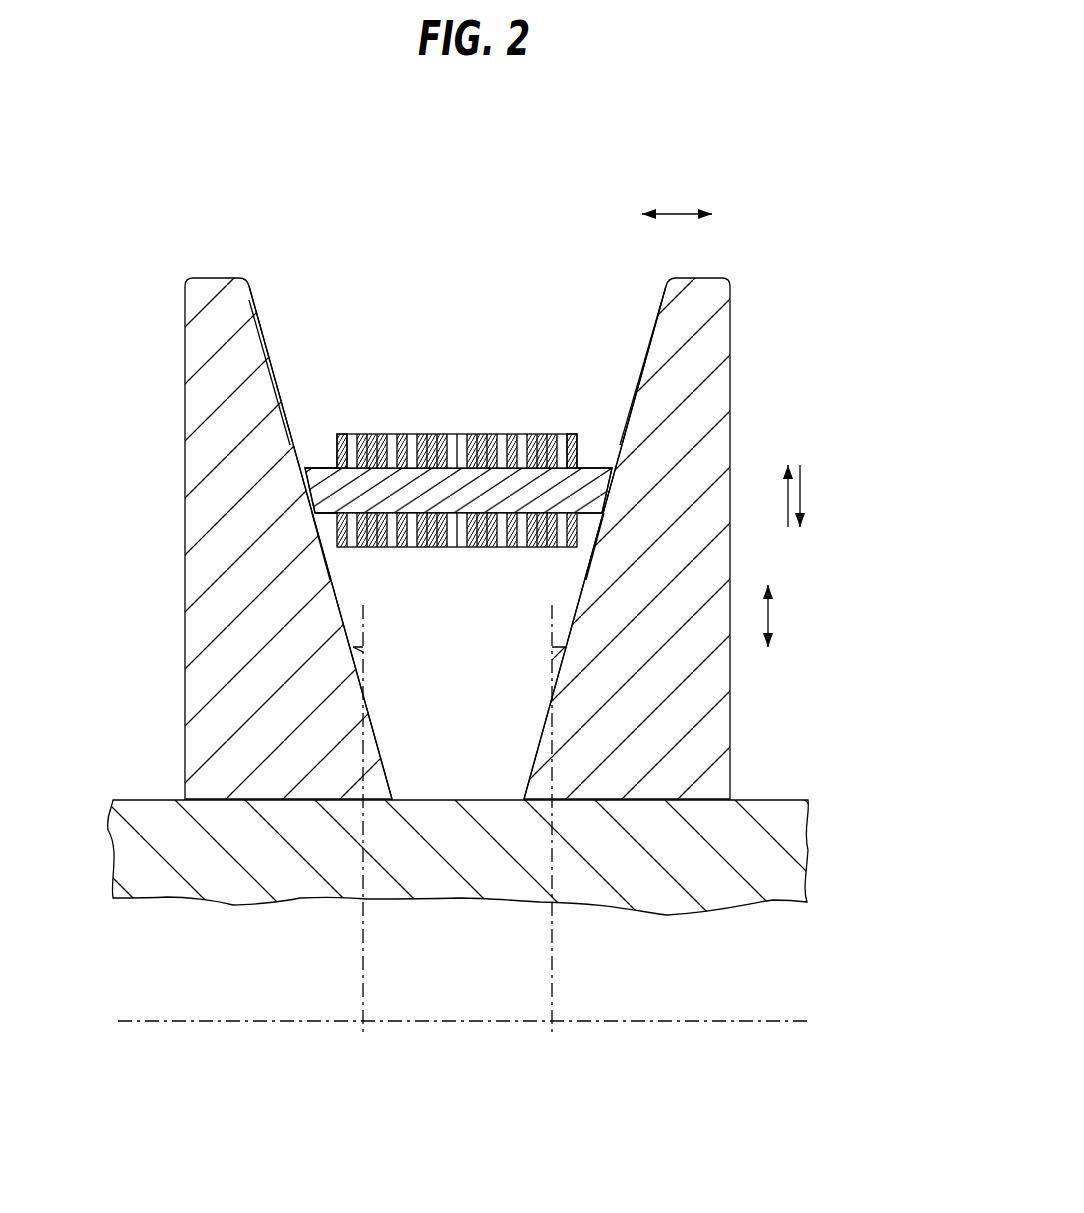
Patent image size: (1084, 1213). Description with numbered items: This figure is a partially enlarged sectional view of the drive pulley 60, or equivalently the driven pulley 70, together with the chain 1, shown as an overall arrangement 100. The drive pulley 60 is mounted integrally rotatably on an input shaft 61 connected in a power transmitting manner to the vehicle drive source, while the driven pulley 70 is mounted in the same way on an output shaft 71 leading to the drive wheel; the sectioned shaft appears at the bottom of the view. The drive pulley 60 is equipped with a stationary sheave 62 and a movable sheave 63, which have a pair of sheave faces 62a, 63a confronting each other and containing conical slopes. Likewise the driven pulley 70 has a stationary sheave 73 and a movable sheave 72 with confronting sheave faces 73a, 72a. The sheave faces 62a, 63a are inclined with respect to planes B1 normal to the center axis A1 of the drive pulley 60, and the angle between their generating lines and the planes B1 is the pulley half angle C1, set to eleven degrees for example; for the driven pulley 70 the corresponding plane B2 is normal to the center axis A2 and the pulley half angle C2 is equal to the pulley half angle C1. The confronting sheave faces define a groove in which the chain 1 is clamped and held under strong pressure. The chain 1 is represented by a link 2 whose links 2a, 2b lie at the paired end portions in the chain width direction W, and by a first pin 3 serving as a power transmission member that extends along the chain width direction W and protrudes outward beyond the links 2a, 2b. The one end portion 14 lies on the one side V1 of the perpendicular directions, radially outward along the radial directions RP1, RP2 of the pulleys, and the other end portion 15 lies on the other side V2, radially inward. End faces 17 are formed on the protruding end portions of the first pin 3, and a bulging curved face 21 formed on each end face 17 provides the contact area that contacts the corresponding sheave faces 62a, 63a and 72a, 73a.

The electronic component holding structure 100 is at (553, 182).
The chain 1 is at (472, 412).
The link 2 is at (352, 434).
The link 2a is at (573, 434).
The link 2b is at (347, 434).
The first pin 3 is at (611, 468).
The one end portion 14 is at (314, 467).
The other end portion 15 is at (327, 515).
The end face 17 is at (305, 471).
The bulging curved face 21 is at (307, 489).
The drive pulley 60 is at (458, 568).
The driven pulley 70 is at (258, 228).
The input shaft 61 is at (458, 892).
The output shaft 71 is at (575, 885).
The stationary sheave 62 is at (277, 505).
The movable sheave 72 is at (190, 317).
The sheave face 62a is at (320, 523).
The sheave face 72a is at (266, 341).
The movable sheave 63 is at (665, 506).
The stationary sheave 73 is at (724, 320).
The sheave face 63a is at (595, 522).
The sheave face 73a is at (648, 343).
The chain width direction W is at (678, 212).
The one side of the perpendicular directions V1 is at (786, 497).
The other side of the perpendicular directions V2 is at (805, 492).
The radial direction RP1 is at (835, 616).
The radial direction RP2 is at (771, 616).
The pulley half angle C1 is at (457, 805).
The pulley half angle C2 is at (357, 646).
The plane B1 is at (459, 652).
The plane B2 is at (363, 652).
The center axis A1 is at (475, 986).
The center axis A2 is at (770, 1020).